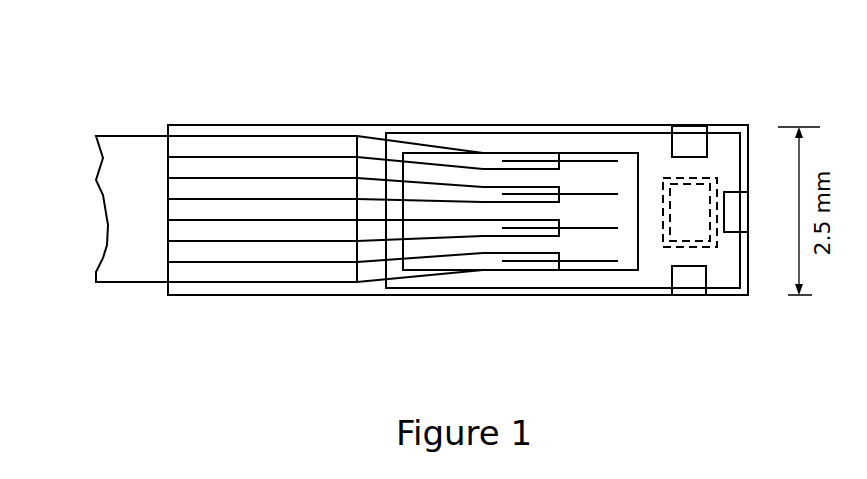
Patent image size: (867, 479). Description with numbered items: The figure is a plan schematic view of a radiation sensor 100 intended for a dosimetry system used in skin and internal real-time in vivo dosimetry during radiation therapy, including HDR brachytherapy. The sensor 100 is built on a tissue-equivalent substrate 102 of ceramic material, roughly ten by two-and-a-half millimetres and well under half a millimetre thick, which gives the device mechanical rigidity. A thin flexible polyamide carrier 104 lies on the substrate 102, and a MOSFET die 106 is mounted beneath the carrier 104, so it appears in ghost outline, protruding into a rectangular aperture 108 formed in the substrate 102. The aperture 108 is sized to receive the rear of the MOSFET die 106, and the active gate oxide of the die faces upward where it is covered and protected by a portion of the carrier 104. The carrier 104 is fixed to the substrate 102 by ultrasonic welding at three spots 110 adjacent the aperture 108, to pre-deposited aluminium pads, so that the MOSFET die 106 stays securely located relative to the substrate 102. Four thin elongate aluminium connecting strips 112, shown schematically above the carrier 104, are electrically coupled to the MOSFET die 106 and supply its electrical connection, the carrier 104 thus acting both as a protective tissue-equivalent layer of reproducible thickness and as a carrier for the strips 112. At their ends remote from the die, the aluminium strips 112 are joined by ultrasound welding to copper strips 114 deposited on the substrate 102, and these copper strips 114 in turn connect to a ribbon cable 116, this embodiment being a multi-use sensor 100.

The radiation sensor 100 is at (138, 34).
The substrate 102 is at (423, 297).
The flexible polyamide carrier 104 is at (498, 289).
The MOSFET die 106 is at (700, 242).
The rectangular aperture 108 is at (670, 178).
The ultrasonic welding spots 110 is at (707, 142).
The aluminium connecting strips 112 is at (577, 154).
The copper strips 114 is at (438, 147).
The ribbon cable 116 is at (132, 287).